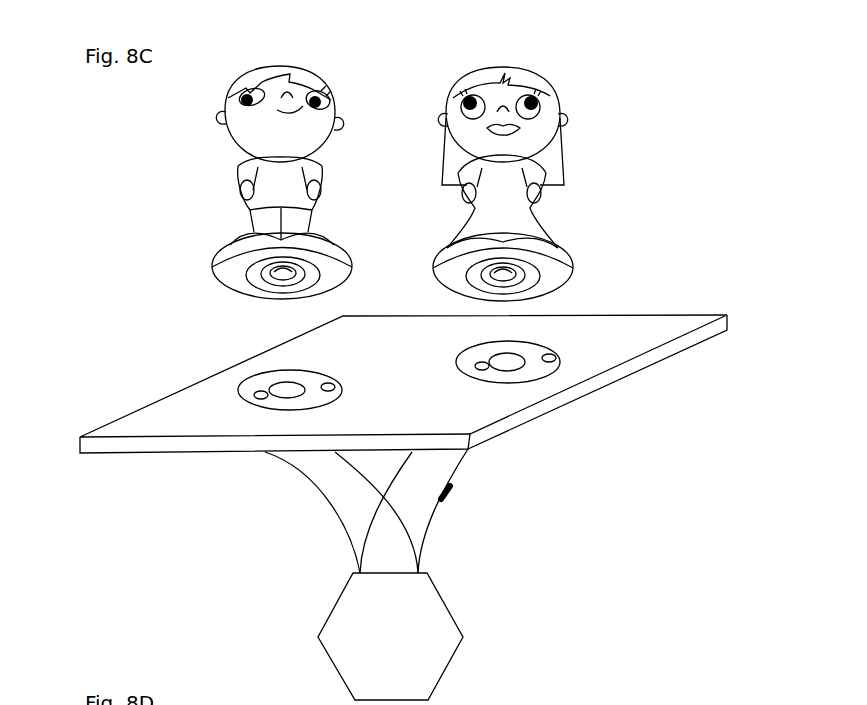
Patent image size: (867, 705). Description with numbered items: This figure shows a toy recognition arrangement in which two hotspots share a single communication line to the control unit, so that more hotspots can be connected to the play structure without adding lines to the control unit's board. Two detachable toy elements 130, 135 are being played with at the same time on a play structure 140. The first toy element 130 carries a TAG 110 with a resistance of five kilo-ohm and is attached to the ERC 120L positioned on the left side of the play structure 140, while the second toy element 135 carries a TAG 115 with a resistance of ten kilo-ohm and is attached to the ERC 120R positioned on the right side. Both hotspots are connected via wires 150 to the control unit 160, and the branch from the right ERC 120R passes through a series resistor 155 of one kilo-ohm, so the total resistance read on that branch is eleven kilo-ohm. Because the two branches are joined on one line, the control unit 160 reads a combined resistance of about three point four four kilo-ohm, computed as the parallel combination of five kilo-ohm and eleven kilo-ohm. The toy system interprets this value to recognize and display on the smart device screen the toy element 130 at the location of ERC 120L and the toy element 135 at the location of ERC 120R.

The TAG 110 is at (246, 280).
The TAG 115 is at (467, 278).
The ERC 120L is at (238, 387).
The ERC 120R is at (560, 368).
The detachable toy element 130 is at (224, 141).
The detachable toy element 135 is at (447, 141).
The play structure 140 is at (136, 412).
The wires 150 is at (297, 480).
The resistor 155 is at (455, 491).
The control unit 160 is at (338, 605).